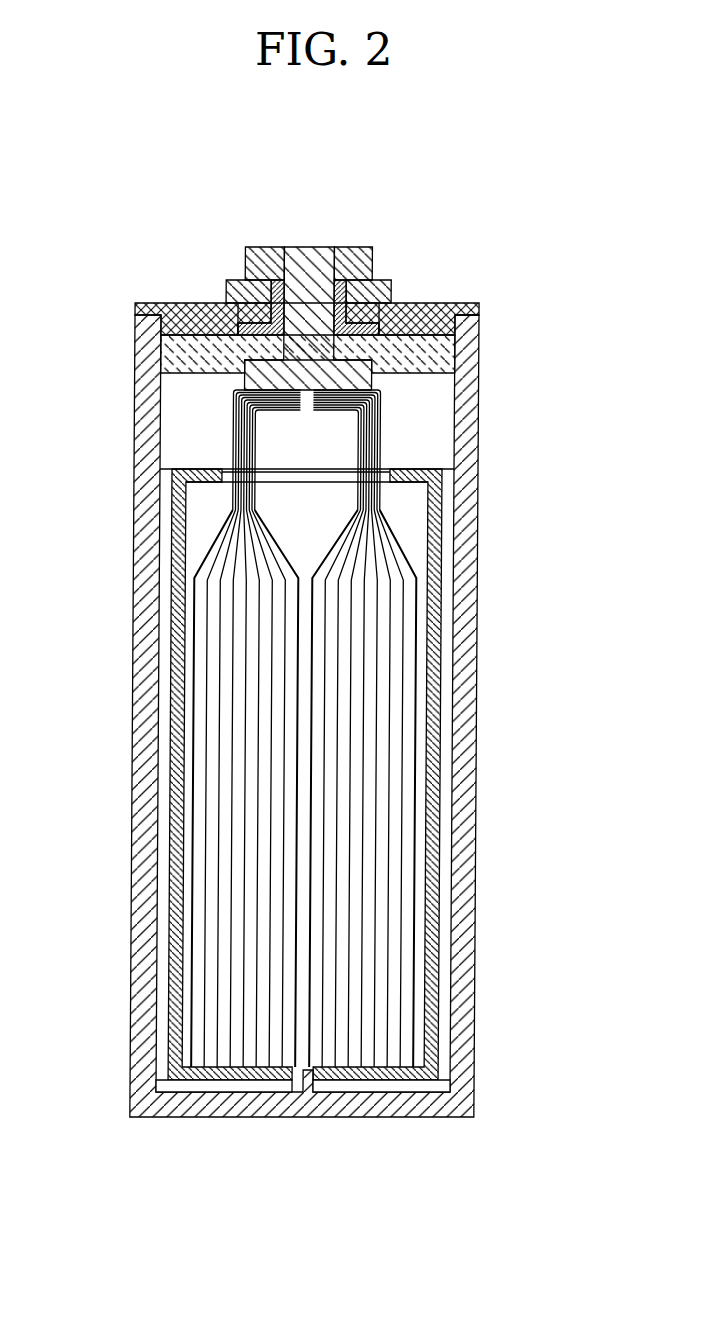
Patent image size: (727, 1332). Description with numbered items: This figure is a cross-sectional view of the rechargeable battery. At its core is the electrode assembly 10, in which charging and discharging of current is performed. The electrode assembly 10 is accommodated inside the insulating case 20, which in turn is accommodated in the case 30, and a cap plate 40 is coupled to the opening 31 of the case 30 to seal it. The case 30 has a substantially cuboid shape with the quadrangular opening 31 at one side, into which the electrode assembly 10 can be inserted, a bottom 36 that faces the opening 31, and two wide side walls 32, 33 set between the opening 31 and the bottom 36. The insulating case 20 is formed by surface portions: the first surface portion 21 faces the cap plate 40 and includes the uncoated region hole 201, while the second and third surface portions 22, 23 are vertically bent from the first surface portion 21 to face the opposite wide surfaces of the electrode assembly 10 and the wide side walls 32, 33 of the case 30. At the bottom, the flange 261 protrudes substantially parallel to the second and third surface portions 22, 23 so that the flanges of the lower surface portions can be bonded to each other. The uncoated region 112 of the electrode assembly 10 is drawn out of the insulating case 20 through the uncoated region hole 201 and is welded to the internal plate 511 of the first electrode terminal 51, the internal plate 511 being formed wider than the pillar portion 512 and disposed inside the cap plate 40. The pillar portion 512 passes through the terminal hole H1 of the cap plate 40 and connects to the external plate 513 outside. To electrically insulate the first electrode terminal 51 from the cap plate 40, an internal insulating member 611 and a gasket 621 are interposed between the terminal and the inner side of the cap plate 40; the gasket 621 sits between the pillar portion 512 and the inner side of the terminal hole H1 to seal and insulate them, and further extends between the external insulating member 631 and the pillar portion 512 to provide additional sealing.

The electrode assembly 10 is at (408, 521).
The uncoated region 112 is at (233, 413).
The insulating case 20 is at (305, 806).
The uncoated region hole 201 is at (383, 458).
The first surface portion 21 is at (197, 468).
The second surface portion 22 is at (178, 850).
The third surface portion 23 is at (435, 850).
The flange 261 is at (387, 1083).
The case 30 is at (311, 748).
The opening 31 is at (443, 310).
The wide side wall 32 is at (147, 766).
The wide side wall 33 is at (463, 769).
The bottom 36 is at (281, 1103).
The cap plate 40 is at (315, 256).
The first electrode terminal 51 is at (311, 258).
The internal plate 511 is at (288, 311).
The pillar portion 512 is at (312, 273).
The external plate 513 is at (355, 226).
The internal insulating member 611 is at (435, 352).
The gasket 621 is at (365, 330).
The external insulating member 631 is at (377, 280).
The terminal hole H1 is at (274, 310).